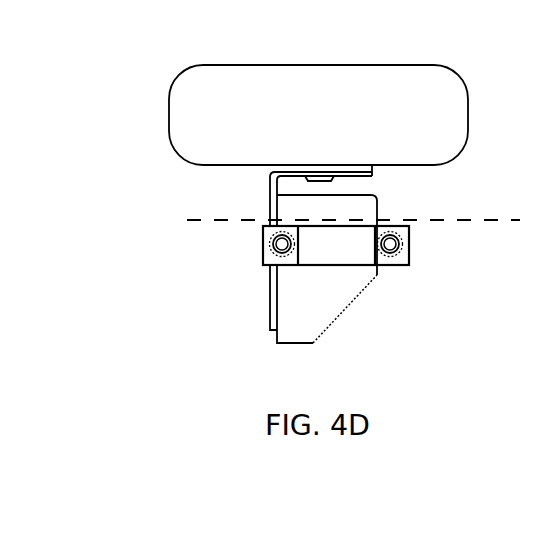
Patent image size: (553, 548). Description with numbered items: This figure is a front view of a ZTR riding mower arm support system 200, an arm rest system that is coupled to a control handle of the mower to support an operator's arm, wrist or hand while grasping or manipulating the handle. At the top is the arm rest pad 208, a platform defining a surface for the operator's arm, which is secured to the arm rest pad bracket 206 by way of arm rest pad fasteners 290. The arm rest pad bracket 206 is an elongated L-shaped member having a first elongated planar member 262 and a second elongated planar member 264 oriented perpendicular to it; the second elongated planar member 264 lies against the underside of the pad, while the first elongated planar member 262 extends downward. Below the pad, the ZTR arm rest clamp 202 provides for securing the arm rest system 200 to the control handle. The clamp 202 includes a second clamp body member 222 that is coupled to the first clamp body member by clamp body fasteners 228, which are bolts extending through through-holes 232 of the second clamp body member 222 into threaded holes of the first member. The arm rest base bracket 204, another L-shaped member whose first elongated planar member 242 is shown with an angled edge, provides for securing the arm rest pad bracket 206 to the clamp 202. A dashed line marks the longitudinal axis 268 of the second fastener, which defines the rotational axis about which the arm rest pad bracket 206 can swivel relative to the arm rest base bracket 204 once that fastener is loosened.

The ZTR riding mower arm support system 200 is at (399, 35).
The arm rest pad 208 is at (245, 61).
The second elongated planar member 264 is at (380, 173).
The arm rest pad fasteners 290 is at (342, 181).
The longitudinal axis 268 is at (213, 216).
The ZTR arm rest clamp 202 is at (261, 249).
The second clamp body member 222 is at (413, 267).
The clamp body fasteners 228 is at (294, 251).
The through-holes 232 is at (397, 254).
The first elongated planar member 262 is at (266, 292).
The arm rest pad bracket 206 is at (266, 321).
The first elongated planar member 242 is at (344, 313).
The arm rest base bracket 204 is at (327, 340).